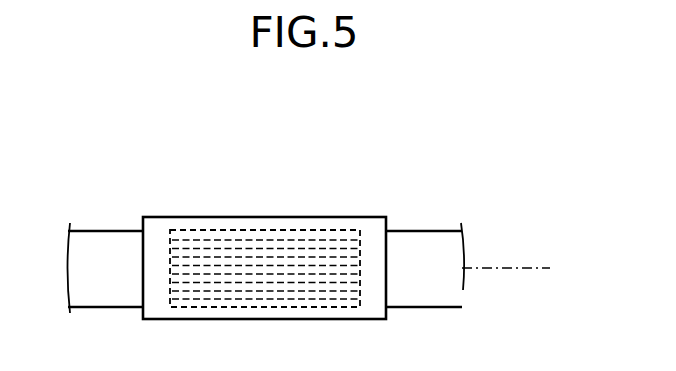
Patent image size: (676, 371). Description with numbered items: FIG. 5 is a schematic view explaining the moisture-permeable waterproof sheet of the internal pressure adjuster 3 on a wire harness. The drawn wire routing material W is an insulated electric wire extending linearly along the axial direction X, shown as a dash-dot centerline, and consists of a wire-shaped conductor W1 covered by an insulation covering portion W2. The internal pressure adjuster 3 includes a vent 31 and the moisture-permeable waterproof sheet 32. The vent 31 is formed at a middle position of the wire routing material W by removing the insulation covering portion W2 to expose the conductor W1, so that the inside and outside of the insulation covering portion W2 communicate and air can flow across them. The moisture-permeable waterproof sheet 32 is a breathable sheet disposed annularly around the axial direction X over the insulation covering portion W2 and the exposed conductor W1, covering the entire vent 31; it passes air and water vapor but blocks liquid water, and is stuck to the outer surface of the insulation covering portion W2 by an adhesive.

The internal pressure adjuster 3 is at (264, 203).
The vent 31 is at (265, 224).
The moisture-permeable waterproof sheet 32 is at (160, 218).
The wire routing material W is at (433, 142).
The conductor W1 is at (321, 237).
The insulation covering portion W2 is at (405, 231).
The axial direction X is at (516, 267).